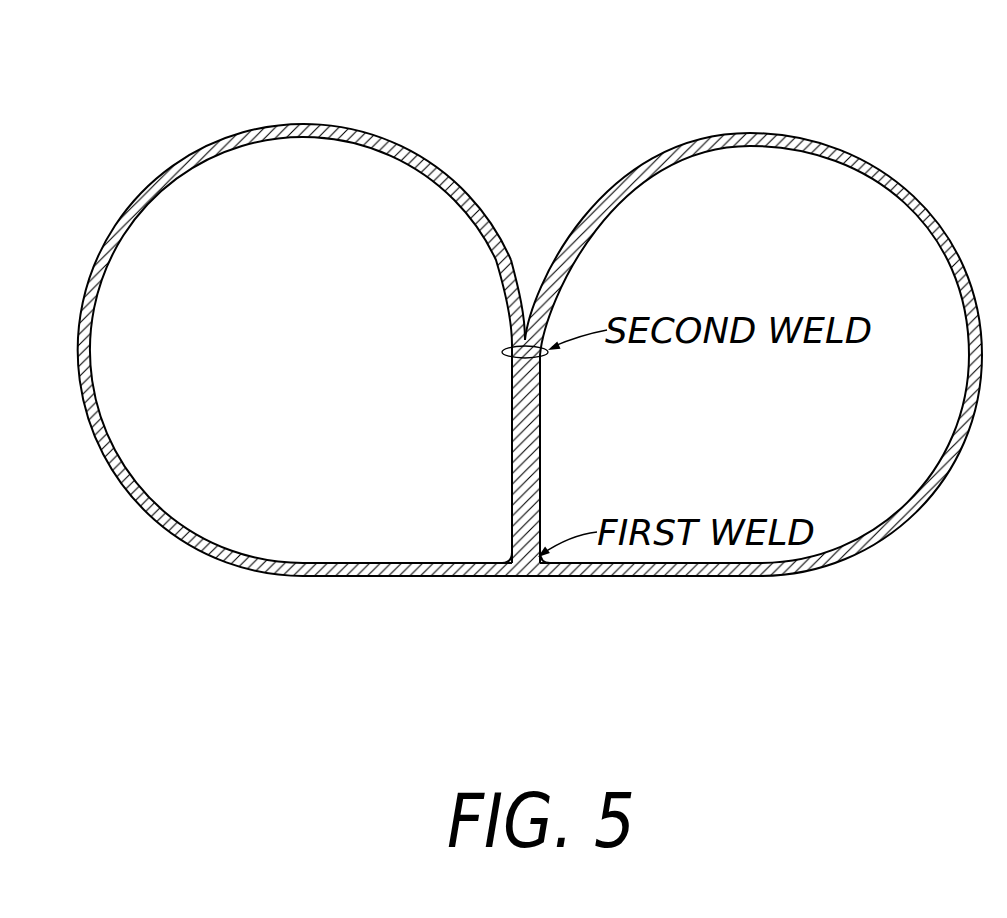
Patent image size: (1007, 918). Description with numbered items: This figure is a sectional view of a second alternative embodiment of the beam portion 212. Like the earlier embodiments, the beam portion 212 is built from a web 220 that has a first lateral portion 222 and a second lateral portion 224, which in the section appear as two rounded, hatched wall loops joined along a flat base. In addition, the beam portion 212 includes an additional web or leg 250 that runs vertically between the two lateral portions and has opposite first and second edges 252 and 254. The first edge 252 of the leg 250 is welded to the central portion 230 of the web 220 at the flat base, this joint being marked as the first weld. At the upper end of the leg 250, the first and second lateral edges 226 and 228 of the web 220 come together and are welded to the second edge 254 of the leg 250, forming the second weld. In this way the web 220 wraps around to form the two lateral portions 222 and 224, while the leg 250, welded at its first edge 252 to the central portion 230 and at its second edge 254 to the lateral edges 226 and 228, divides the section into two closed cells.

The beam portion 212 is at (777, 115).
The web 220 is at (700, 598).
The first lateral portion 222 is at (889, 170).
The second lateral portion 224 is at (360, 128).
The first lateral edge 226 is at (532, 326).
The second lateral edge 228 is at (512, 330).
The central portion 230 is at (518, 572).
The leg 250 is at (547, 437).
The first edge 252 is at (516, 553).
The second edge 254 is at (512, 385).